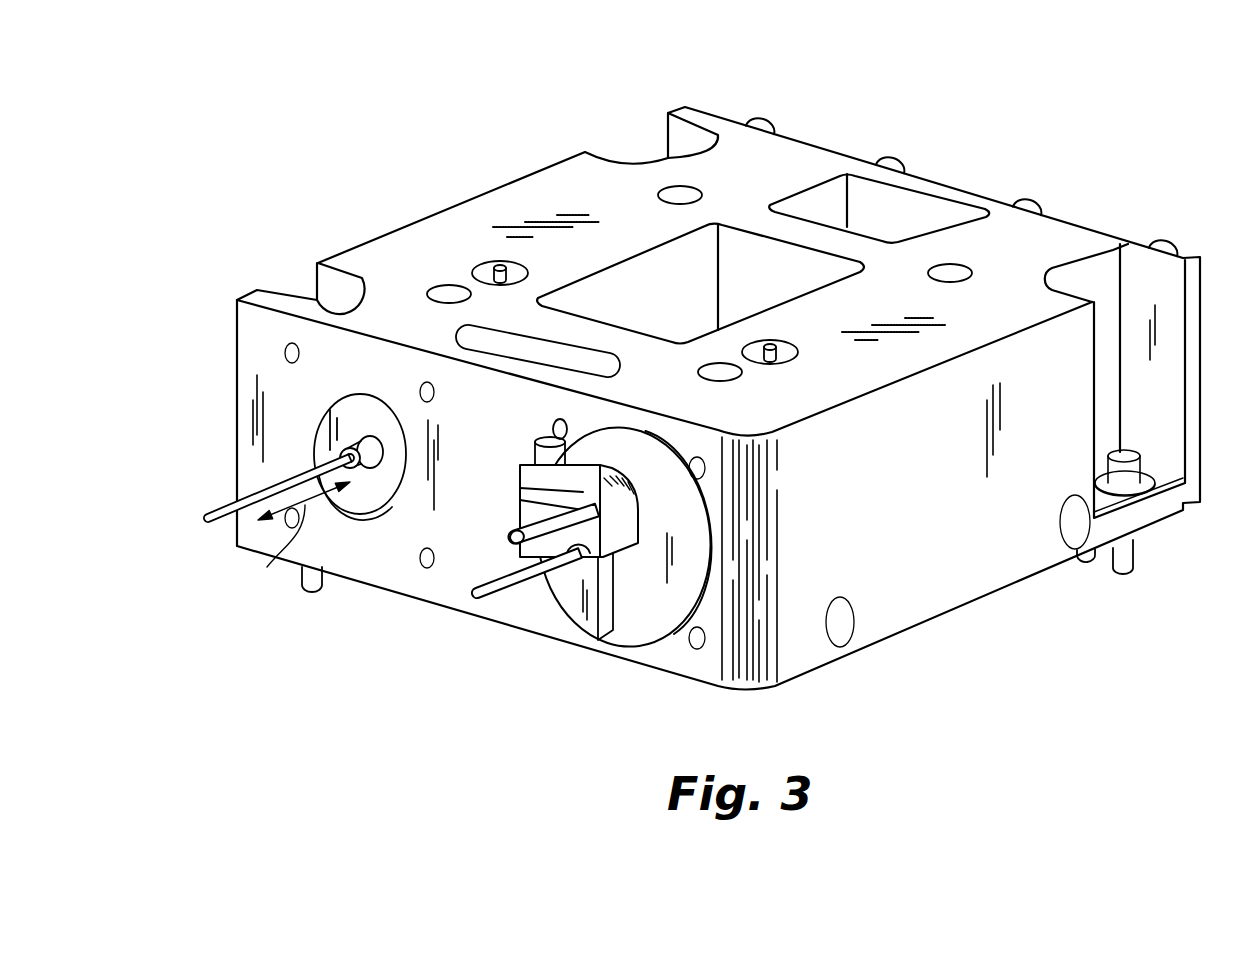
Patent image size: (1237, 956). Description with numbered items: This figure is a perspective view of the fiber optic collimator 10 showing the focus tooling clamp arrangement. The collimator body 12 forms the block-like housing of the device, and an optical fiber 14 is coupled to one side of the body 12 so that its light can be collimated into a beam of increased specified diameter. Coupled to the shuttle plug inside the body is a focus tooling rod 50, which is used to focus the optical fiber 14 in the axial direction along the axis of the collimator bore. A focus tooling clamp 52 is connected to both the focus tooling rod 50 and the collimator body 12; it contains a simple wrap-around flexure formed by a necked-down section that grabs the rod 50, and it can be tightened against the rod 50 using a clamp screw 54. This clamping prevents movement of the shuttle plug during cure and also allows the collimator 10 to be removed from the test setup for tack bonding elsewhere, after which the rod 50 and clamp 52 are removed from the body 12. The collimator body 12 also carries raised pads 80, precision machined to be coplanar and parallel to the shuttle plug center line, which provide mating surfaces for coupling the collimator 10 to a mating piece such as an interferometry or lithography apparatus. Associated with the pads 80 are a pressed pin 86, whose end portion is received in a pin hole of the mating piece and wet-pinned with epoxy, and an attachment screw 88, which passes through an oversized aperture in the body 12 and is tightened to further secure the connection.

The fiber optic collimator 10 is at (1133, 137).
The collimator body 12 is at (943, 187).
The optical fiber 14 is at (490, 594).
The focus tooling rod 50 is at (512, 537).
The focus tooling clamp 52 is at (590, 620).
The clamp screw 54 is at (533, 447).
The raised pads 80 is at (1187, 513).
The pressed pin 86 is at (1078, 560).
The attachment screw 88 is at (1135, 560).